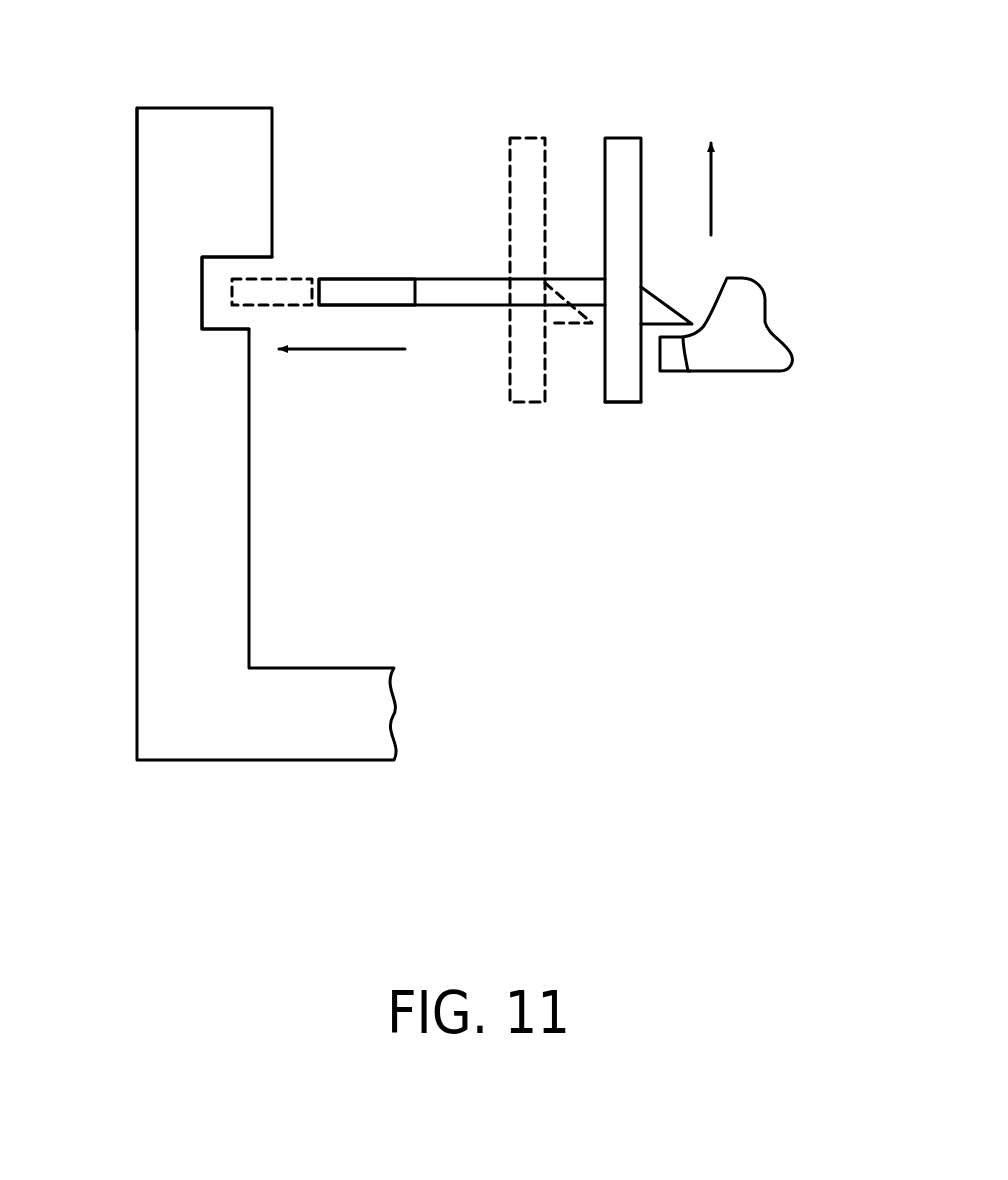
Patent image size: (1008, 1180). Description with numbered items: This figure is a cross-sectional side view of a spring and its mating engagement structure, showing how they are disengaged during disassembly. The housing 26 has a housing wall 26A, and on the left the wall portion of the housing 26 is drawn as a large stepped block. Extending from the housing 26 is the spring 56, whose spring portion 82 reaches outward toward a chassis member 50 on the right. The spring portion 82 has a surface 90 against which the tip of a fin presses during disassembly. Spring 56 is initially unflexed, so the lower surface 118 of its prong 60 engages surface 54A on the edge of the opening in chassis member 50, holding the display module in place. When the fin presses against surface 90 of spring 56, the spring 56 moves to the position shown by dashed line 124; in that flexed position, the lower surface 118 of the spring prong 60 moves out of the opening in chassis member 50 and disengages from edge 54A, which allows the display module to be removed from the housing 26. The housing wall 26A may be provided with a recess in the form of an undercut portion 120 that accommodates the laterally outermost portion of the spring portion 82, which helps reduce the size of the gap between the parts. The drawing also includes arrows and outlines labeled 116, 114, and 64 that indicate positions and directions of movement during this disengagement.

The housing 26 is at (250, 738).
The housing wall 26A is at (137, 165).
The undercut portion 120 is at (233, 257).
The dashed line 124 is at (510, 170).
The spring portion 82 is at (453, 277).
The surface 90 is at (418, 292).
The second position of plate 116 is at (527, 118).
The lower surface 118 is at (557, 328).
The plate 114 is at (620, 118).
The prong 60 is at (653, 312).
The spring 56 is at (622, 422).
The surface 54A is at (684, 340).
The chassis member 50 is at (800, 340).
The retraction direction 64 is at (338, 352).